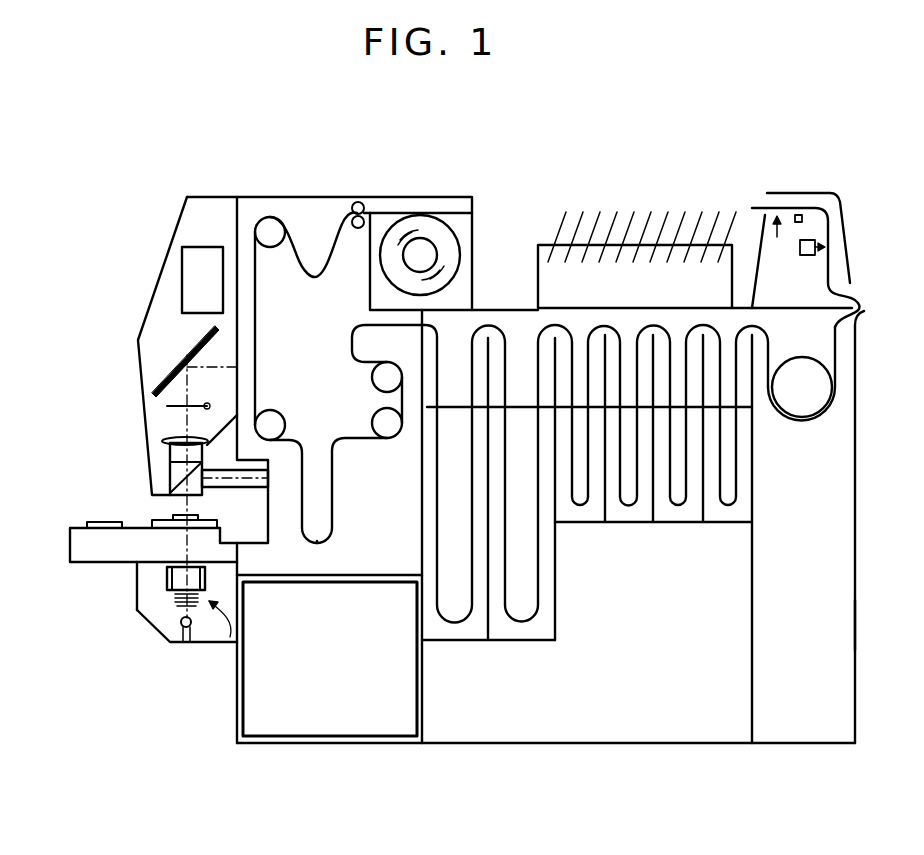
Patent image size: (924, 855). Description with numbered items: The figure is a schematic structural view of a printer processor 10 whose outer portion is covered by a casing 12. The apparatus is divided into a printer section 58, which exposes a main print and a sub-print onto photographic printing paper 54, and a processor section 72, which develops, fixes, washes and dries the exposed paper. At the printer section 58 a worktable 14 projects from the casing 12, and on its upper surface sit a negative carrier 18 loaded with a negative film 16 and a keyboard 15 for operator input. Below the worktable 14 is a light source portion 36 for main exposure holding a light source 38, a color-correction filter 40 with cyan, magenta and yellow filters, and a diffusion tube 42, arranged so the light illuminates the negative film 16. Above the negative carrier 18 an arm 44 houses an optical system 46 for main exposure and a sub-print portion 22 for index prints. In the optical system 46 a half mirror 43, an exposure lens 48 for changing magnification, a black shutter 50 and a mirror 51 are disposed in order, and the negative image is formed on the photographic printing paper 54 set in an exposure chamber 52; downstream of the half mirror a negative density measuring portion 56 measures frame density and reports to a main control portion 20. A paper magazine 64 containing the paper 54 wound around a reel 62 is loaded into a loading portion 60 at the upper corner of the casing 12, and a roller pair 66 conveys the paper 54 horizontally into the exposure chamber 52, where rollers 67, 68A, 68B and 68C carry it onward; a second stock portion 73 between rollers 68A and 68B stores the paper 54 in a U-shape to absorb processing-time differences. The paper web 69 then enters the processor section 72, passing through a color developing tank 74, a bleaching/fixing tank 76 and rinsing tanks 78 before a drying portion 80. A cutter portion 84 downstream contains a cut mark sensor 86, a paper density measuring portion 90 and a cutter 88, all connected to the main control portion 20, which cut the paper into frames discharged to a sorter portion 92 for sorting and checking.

The printer processor 10 is at (522, 156).
The casing 12 is at (308, 197).
The worktable 14 is at (77, 552).
The keyboard 15 is at (93, 522).
The negative film 16 is at (173, 512).
The negative carrier 18 is at (160, 527).
The main control portion 20 is at (407, 712).
The sub-print portion 22 is at (195, 247).
The light source portion for main exposure 36 is at (147, 629).
The light source 38 is at (195, 628).
The color-correction filter 40 is at (236, 643).
The diffusion tube 42 is at (205, 582).
The half mirror 43 is at (170, 470).
The arm 44 is at (142, 325).
The optical system for main exposure 46 is at (160, 420).
The exposure lens 48 is at (160, 443).
The black shutter 50 is at (167, 406).
The mirror 51 is at (193, 353).
The exposure chamber 52 is at (278, 322).
The photographic printing paper 54 is at (336, 470).
The negative density measuring portion 56 is at (242, 487).
The printer section 58 is at (422, 778).
The loading portion 60 is at (377, 205).
The reel 62 is at (432, 253).
The paper magazine 64 is at (475, 213).
The roller pair 66 is at (364, 205).
The roller 67 is at (273, 217).
The roller 68A is at (272, 410).
The roller 68B is at (380, 422).
The roller 68C is at (377, 378).
The photosensitive material 69 is at (313, 243).
The processor section 72 is at (858, 776).
The second stock portion 73 is at (325, 531).
The color developing tank 74 is at (468, 640).
The bleaching/fixing tank 76 is at (537, 640).
The rinsing tanks 78 is at (740, 527).
The drying portion 80 is at (855, 625).
The cutter portion 84 is at (798, 189).
The cut mark sensor 86 is at (807, 210).
The cutter 88 is at (765, 223).
The paper density measuring portion 90 is at (815, 257).
The sorter portion 92 is at (555, 245).